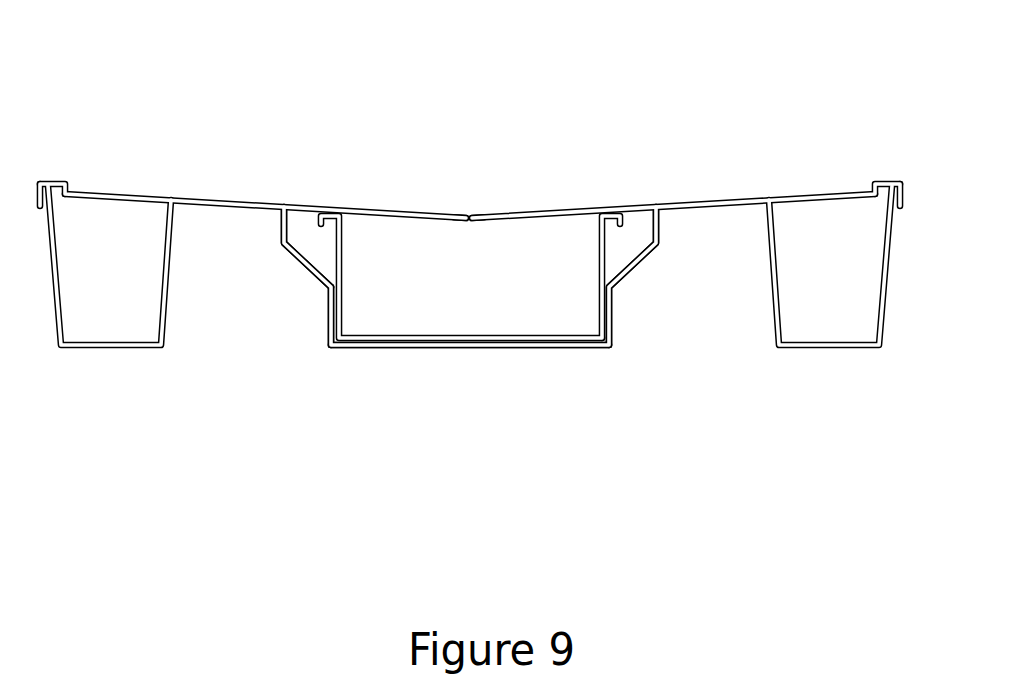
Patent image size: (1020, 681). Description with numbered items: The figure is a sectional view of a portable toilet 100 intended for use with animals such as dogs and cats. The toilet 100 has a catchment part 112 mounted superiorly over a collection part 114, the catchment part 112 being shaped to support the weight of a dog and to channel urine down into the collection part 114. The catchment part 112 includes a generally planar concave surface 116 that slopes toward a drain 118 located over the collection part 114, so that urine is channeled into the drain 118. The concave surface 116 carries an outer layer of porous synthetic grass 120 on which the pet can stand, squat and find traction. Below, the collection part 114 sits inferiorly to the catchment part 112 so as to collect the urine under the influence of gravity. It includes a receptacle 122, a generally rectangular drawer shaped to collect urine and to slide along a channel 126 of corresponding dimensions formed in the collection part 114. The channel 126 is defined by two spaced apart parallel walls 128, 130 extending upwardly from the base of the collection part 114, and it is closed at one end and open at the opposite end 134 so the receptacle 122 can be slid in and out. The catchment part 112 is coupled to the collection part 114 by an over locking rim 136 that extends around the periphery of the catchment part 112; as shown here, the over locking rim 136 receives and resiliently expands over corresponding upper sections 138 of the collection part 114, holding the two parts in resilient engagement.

The portable toilet 100 is at (113, 364).
The catchment part 112 is at (159, 183).
The collection part 114 is at (555, 350).
The concave surface 116 is at (302, 207).
The drain 118 is at (470, 198).
The layer of porous synthetic grass 120 is at (733, 202).
The receptacle 122 is at (602, 250).
The channel 126 is at (340, 303).
The first parallel wall 128 is at (330, 313).
The second parallel wall 130 is at (610, 298).
The open end of channel 134 is at (485, 350).
The over locking rim 136 is at (55, 178).
The upper sections of collection part 138 is at (62, 180).